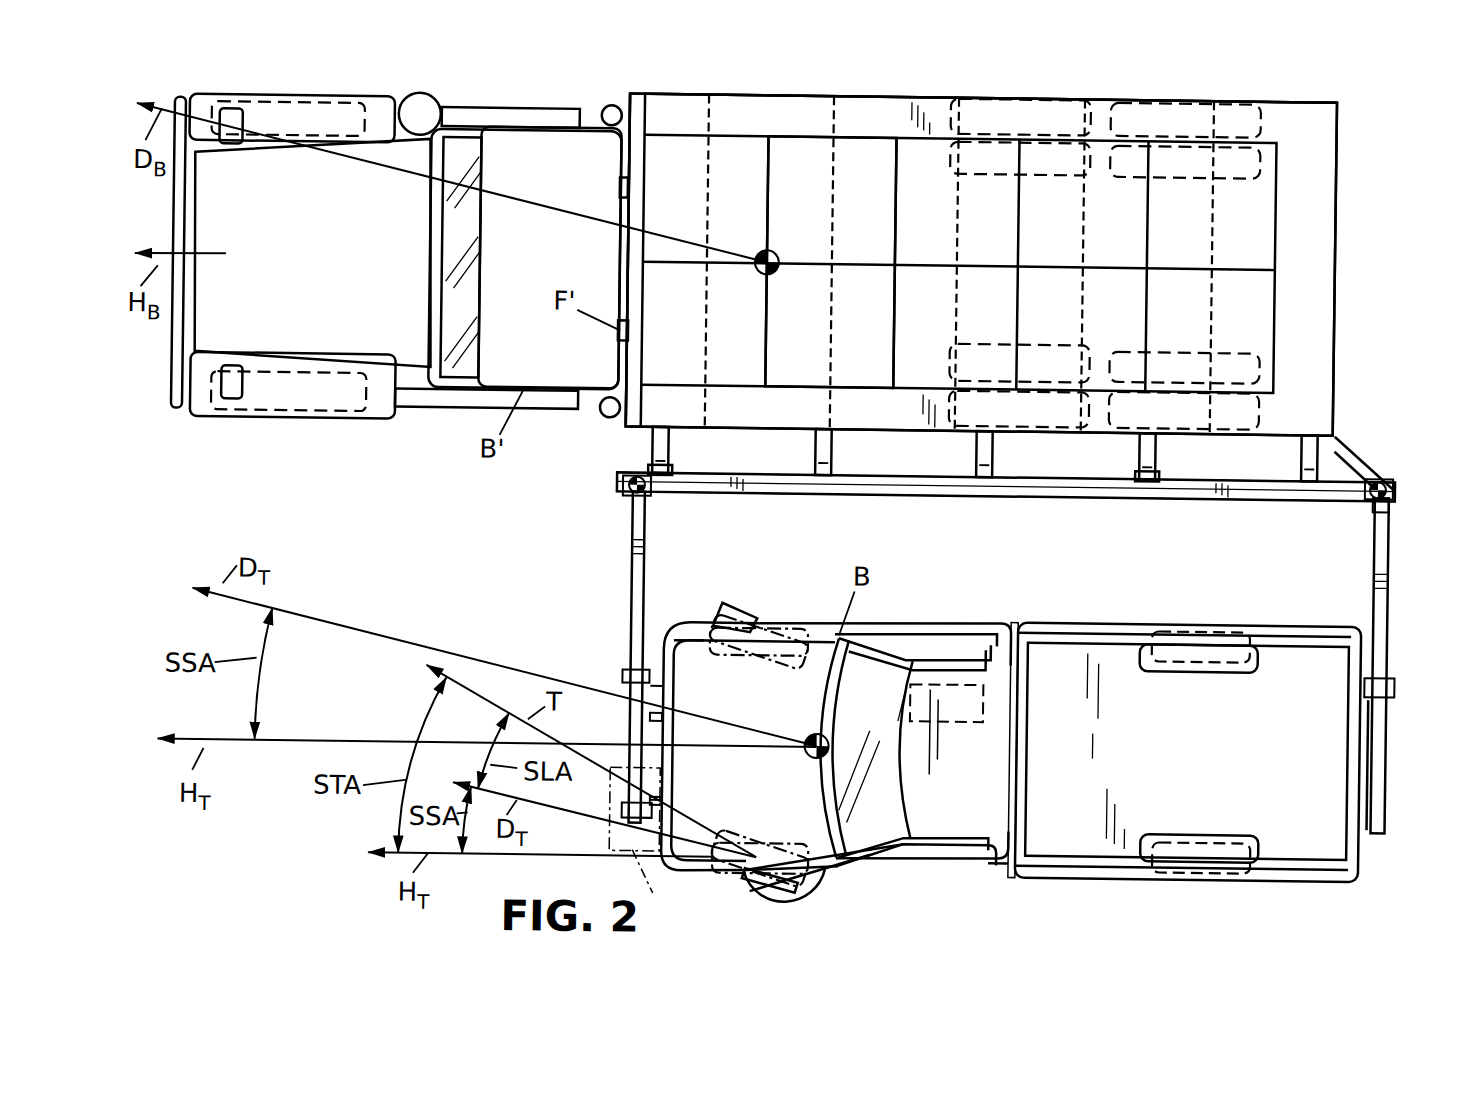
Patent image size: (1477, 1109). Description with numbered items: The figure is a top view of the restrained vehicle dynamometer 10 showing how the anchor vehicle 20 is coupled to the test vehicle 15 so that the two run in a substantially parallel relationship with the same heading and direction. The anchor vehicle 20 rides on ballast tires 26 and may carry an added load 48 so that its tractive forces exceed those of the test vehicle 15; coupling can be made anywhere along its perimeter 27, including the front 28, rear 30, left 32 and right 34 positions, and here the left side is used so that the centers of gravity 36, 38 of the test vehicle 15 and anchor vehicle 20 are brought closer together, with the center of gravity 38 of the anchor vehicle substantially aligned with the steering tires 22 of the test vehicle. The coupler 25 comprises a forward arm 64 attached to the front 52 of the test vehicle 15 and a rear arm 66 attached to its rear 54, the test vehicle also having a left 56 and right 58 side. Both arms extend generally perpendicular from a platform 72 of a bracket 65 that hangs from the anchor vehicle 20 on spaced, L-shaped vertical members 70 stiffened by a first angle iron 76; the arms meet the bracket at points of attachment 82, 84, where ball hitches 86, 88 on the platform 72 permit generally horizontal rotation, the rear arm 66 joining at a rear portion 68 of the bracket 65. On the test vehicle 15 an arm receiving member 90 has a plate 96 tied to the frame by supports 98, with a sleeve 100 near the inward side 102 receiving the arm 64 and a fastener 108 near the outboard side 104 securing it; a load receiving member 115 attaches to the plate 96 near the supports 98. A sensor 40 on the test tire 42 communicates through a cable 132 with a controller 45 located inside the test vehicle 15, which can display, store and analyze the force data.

The restrained vehicle dynamometer 10 is at (1407, 111).
The test vehicle 15 is at (1146, 600).
The anchor vehicle 20 is at (446, 441).
The tires 22 is at (740, 614).
The coupler 25 is at (1395, 438).
The ballast tires 26 is at (314, 111).
The perimeter 27 is at (635, 436).
The front 28 is at (169, 365).
The rear 30 is at (1332, 250).
The left 32 is at (866, 430).
The right 34 is at (756, 94).
The center of gravity 36 is at (813, 759).
The center of gravity 38 is at (770, 270).
The sensor 40 is at (767, 887).
The test tire 42 is at (807, 892).
The controller 45 is at (952, 680).
The load 48 is at (853, 156).
The front 52 is at (666, 644).
The rear 54 is at (1370, 842).
The left 56 is at (999, 869).
The right 58 is at (1004, 621).
The forward arm 64 is at (631, 580).
The bracket 65 is at (861, 498).
The rear arm 66 is at (1387, 604).
The rear portion 68 is at (1349, 489).
The vertical members 70 is at (658, 471).
The platform 72 is at (886, 483).
The first angle iron 76 is at (772, 468).
The point of attachment 82 is at (623, 507).
The point of attachment 84 is at (1392, 498).
The ball hitch 86 is at (647, 499).
The ball hitch 88 is at (1391, 476).
The arm receiving member 90 is at (633, 728).
The plate 96 is at (654, 719).
The supports 98 is at (662, 687).
The sleeve 100 is at (625, 674).
The inward side 102 is at (912, 621).
The outboard side 104 is at (954, 877).
The fastener 108 is at (617, 835).
The load receiving member 115 is at (664, 879).
The cable 132 is at (844, 884).